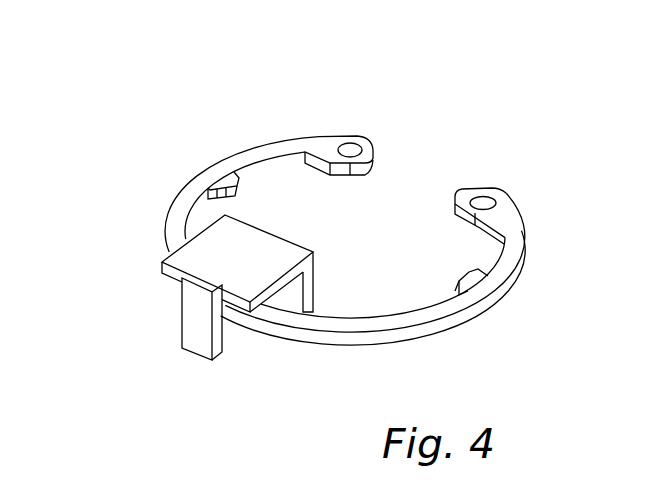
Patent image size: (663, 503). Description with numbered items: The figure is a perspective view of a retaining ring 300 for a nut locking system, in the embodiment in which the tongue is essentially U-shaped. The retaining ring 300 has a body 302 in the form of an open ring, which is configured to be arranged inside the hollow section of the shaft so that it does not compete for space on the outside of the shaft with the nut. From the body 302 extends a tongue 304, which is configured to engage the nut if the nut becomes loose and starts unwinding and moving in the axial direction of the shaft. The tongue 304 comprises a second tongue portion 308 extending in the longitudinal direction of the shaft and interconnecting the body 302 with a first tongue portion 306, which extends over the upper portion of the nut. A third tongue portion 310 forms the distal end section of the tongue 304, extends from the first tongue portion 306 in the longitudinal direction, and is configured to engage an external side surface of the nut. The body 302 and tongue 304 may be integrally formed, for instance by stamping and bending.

The retaining ring 300 is at (268, 96).
The body 302 is at (242, 155).
The tongue 304 is at (334, 215).
The first tongue portion 306 is at (215, 257).
The second tongue portion 308 is at (305, 287).
The third tongue portion 310 is at (185, 327).